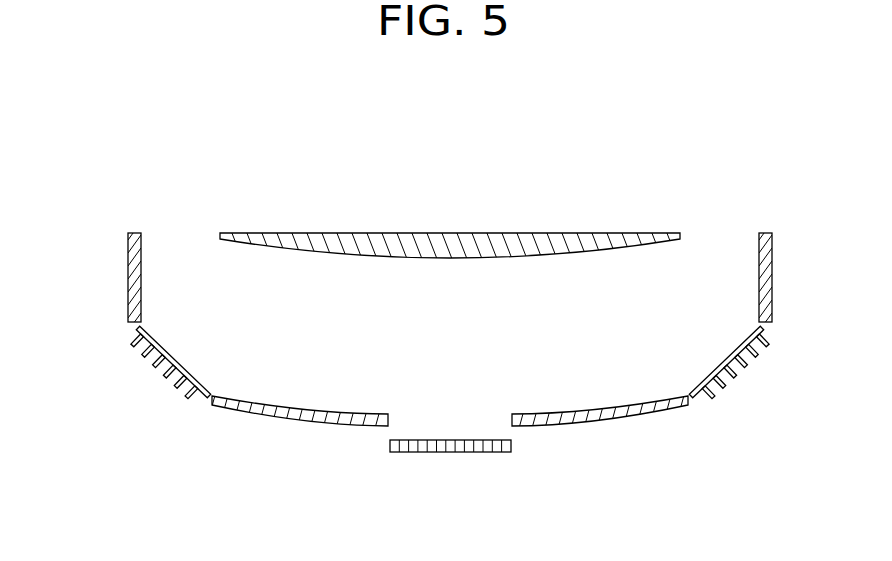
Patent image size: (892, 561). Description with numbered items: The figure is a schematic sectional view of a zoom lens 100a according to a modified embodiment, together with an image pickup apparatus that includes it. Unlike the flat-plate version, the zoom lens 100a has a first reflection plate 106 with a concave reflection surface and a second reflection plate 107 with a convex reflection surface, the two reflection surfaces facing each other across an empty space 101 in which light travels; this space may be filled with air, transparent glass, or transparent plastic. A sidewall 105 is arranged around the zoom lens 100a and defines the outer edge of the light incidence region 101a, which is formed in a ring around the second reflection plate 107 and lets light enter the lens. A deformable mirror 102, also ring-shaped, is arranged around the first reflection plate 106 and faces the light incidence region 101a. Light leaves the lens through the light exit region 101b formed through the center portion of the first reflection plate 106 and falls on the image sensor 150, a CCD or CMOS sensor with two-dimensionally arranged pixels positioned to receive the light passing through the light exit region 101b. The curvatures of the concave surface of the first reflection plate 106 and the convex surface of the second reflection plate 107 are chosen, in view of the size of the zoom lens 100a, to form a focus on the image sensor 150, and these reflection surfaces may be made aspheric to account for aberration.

The zoom lens 100a is at (796, 148).
The empty space 101 is at (470, 330).
The light incidence region 101a is at (717, 236).
The light exit region 101b is at (408, 414).
The deformable mirror 102 is at (736, 381).
The sidewall 105 is at (773, 268).
The first reflection plate 106 is at (598, 421).
The second reflection plate 107 is at (453, 243).
The image sensor 150 is at (453, 453).